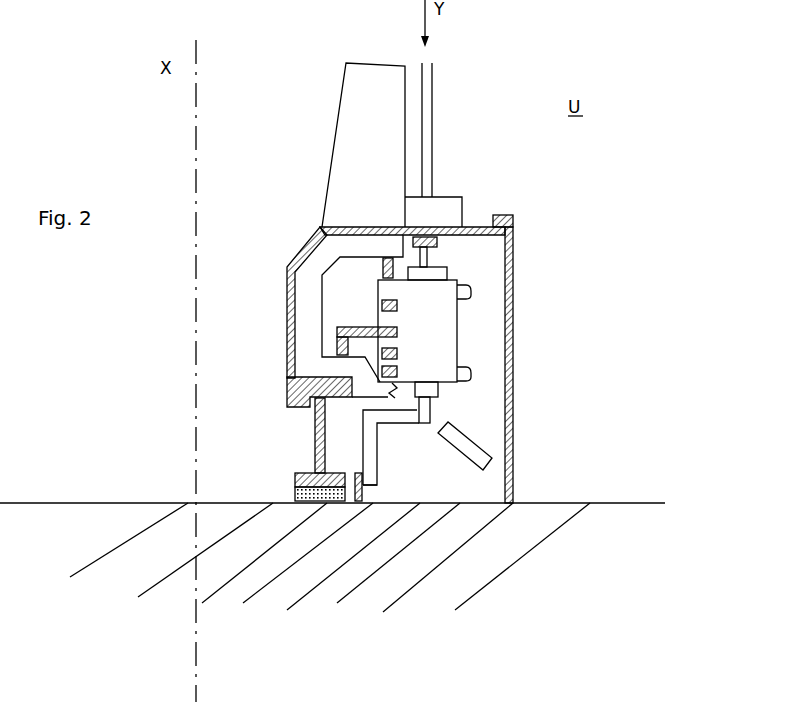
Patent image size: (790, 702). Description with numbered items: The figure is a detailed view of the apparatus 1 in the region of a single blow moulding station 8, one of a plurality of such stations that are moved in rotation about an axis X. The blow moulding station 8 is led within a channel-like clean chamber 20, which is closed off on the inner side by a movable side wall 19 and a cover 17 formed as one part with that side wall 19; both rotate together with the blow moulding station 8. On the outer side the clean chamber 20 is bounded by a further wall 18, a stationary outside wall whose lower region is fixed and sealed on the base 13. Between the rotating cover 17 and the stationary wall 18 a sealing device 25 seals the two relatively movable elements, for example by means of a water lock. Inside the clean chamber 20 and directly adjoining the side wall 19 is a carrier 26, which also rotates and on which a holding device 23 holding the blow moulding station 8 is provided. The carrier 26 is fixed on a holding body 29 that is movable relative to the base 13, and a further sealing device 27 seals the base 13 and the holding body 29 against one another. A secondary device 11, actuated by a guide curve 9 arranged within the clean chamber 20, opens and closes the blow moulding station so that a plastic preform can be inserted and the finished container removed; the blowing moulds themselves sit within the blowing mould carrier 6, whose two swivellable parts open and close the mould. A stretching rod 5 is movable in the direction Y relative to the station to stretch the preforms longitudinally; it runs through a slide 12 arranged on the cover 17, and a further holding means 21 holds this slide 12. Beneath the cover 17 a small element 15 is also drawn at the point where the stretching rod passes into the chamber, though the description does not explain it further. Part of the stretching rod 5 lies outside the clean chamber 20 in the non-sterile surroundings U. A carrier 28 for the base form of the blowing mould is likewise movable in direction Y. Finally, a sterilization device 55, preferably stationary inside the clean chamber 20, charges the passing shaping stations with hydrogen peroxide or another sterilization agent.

The apparatus 1 is at (290, 121).
The stretching rod 5 is at (427, 145).
The blowing mould carrier 6 is at (445, 352).
The blow moulding station 8 is at (445, 315).
The guide curve 9 is at (375, 485).
The secondary device 11 is at (377, 438).
The slide 12 is at (443, 205).
The base 13 is at (480, 592).
The bearing 15 is at (430, 241).
The cover 17 is at (372, 228).
The wall 18 is at (513, 288).
The side wall 19 is at (284, 312).
The clean chamber 20 is at (477, 433).
The holding means 21 is at (388, 110).
The holding device 23 is at (362, 326).
The sealing device 25 is at (512, 219).
The carrier 26 is at (311, 360).
The sealing device 27 is at (293, 495).
The carrier 28 is at (430, 411).
The holding body 29 is at (312, 452).
The sterilization device 55 is at (363, 437).